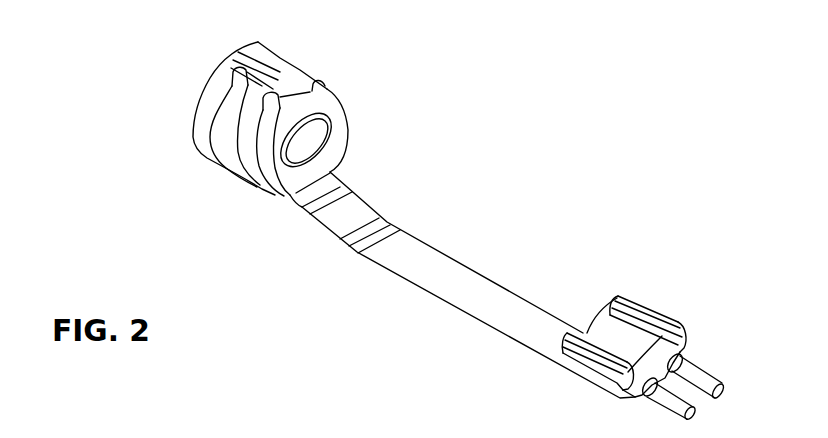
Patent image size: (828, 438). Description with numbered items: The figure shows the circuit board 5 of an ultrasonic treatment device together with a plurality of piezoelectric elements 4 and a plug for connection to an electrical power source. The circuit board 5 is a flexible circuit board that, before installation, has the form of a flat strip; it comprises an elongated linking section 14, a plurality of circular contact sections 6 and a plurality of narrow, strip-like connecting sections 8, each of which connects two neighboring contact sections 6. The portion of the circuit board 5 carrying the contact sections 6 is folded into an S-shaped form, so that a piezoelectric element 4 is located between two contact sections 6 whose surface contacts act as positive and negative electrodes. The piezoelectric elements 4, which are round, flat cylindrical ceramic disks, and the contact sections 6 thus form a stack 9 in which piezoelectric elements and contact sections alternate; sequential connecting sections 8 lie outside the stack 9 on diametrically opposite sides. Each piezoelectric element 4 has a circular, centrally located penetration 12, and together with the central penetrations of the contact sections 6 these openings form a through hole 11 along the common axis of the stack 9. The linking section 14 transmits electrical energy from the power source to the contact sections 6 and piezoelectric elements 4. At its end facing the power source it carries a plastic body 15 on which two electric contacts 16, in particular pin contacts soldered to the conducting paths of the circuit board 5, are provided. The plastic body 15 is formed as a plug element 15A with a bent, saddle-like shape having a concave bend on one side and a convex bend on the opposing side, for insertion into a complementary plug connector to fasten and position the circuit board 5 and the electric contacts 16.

The piezoelectric element 4 is at (274, 143).
The circuit board 5 is at (462, 285).
The contact section 6 is at (332, 165).
The connecting section 8 is at (301, 70).
The stack 9 is at (251, 118).
The through hole 11 is at (332, 175).
The penetration 12 is at (299, 149).
The linking section 14 is at (483, 299).
The plastic body 15 is at (637, 312).
The plug element 15A is at (659, 288).
The electric contact 16 is at (721, 366).